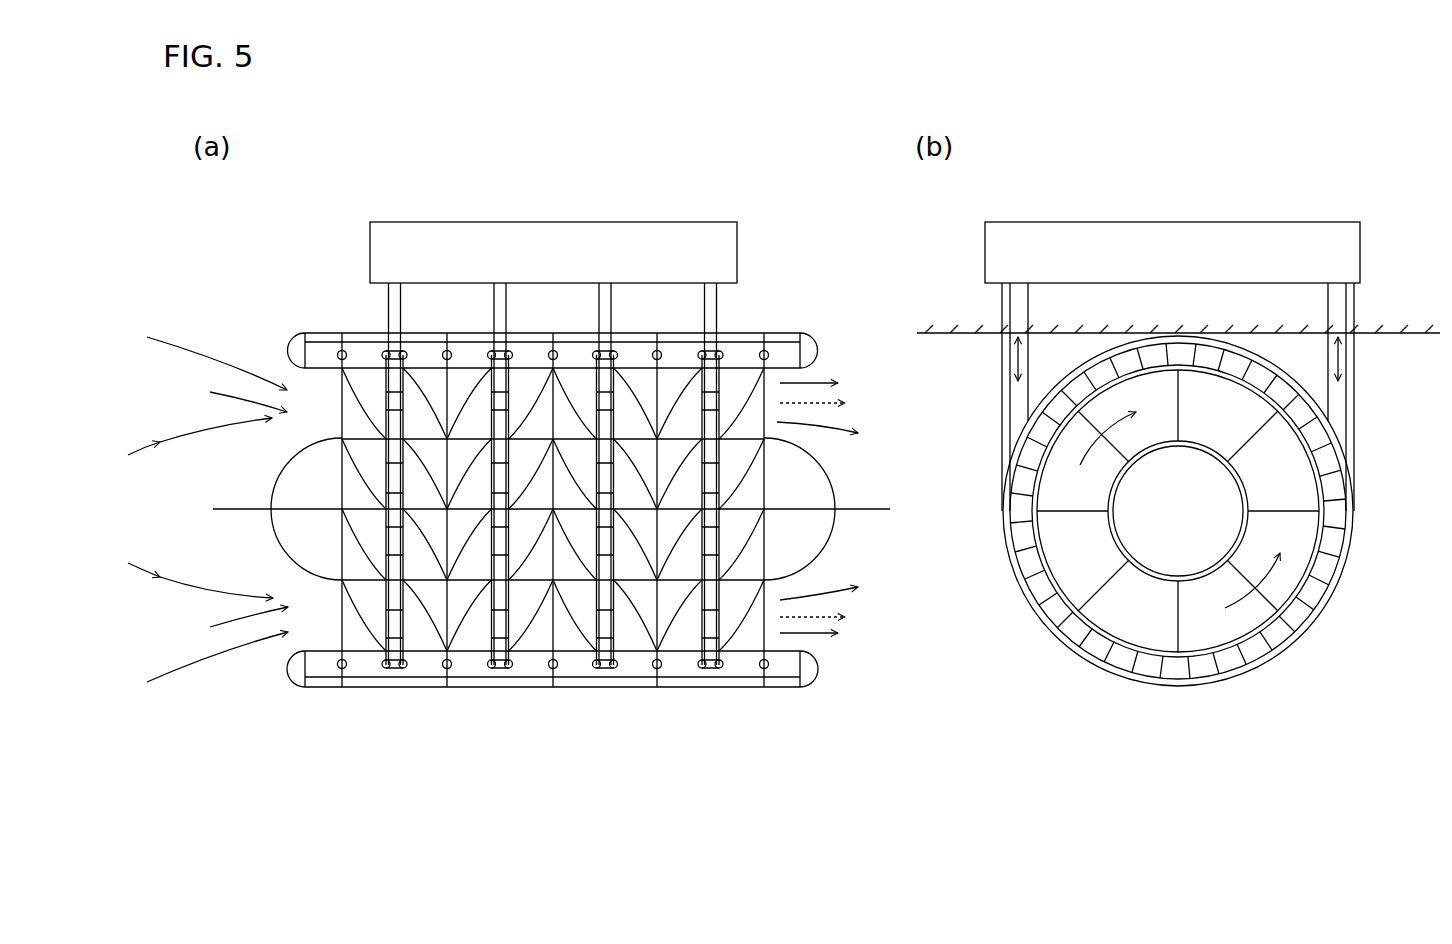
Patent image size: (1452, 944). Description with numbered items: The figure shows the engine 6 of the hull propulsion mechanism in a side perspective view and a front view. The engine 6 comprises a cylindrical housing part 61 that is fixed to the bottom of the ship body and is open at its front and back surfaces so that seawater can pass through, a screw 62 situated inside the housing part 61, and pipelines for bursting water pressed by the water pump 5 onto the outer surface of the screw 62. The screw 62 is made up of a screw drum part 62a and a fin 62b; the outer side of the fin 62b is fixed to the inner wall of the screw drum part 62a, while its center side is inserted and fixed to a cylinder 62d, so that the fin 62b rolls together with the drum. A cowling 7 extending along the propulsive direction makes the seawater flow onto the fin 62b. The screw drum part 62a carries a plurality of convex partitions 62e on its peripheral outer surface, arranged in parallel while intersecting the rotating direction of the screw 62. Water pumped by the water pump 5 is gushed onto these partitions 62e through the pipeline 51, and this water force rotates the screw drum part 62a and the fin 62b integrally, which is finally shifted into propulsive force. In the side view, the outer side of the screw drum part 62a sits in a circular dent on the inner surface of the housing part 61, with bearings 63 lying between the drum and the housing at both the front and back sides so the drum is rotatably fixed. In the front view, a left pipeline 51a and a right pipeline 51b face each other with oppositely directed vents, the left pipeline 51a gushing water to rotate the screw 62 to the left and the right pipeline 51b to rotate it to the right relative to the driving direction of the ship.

The water pump 5 is at (865, 252).
The engine 6 is at (801, 288).
The cowling 7 is at (817, 532).
The pipeline 51 is at (395, 317).
The left pipeline 51a is at (1018, 393).
The right pipeline 51b is at (1338, 400).
The housing part 61 is at (367, 355).
The screw 62 is at (395, 617).
The screw drum part 62a is at (1232, 656).
The fin 62b is at (743, 615).
The cylinder 62d is at (1250, 520).
The partition 62e is at (1052, 602).
The bearing 63 is at (385, 665).